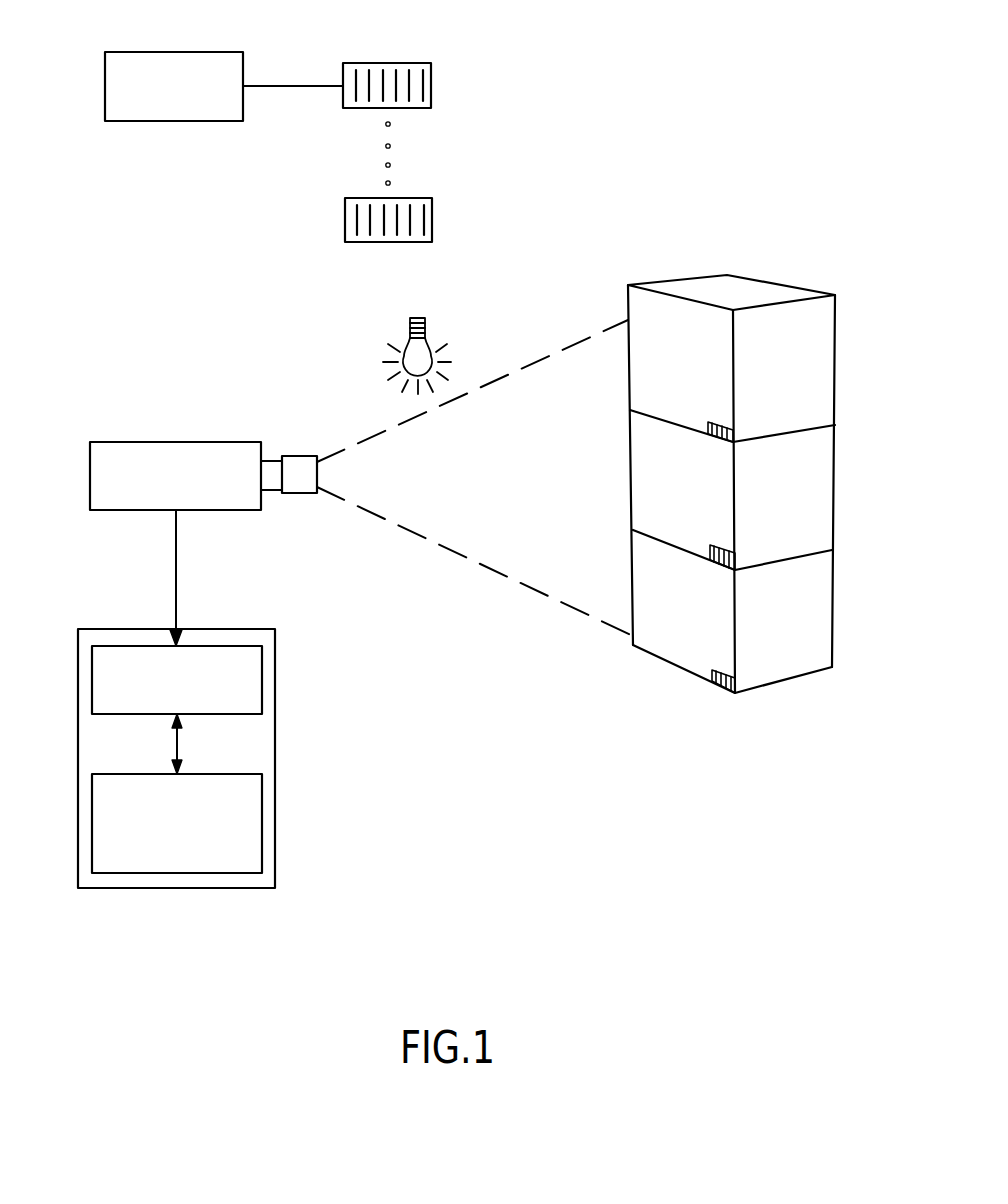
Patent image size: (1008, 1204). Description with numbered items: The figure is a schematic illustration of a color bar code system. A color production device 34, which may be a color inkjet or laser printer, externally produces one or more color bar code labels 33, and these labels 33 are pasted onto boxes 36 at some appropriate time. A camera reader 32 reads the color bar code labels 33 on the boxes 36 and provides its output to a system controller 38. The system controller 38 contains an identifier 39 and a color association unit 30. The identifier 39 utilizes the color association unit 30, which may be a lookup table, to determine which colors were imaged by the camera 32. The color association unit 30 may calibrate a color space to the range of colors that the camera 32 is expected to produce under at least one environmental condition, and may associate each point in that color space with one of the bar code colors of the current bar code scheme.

The color association unit 30 is at (220, 873).
The camera reader 32 is at (195, 442).
The color bar code labels 33 is at (431, 86).
The color production device 34 is at (173, 52).
The boxes 36 is at (805, 398).
The system controller 38 is at (78, 757).
The identifier 39 is at (220, 646).